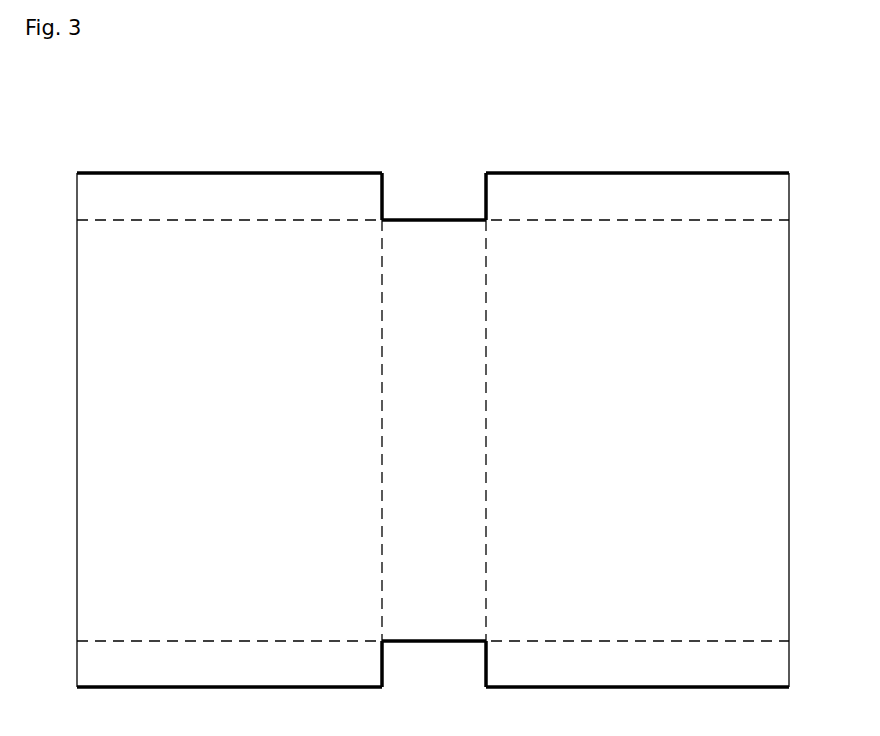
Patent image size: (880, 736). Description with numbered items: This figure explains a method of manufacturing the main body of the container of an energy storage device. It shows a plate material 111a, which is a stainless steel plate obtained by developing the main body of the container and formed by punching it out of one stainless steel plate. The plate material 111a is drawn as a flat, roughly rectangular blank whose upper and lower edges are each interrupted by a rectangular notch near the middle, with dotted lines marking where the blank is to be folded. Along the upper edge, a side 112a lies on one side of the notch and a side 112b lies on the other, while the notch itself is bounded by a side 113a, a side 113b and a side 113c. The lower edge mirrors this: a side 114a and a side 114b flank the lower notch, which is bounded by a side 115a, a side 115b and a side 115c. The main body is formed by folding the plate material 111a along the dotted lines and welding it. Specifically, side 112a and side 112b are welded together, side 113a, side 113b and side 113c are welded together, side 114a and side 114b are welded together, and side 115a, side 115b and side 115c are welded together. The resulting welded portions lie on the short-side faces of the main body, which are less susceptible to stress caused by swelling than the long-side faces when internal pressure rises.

The plate material 111a is at (813, 96).
The side 112a is at (203, 173).
The side 112b is at (622, 173).
The side 113a is at (392, 182).
The side 113b is at (476, 180).
The side 113c is at (415, 217).
The side 114a is at (213, 690).
The side 114b is at (642, 690).
The side 115a is at (382, 670).
The side 115b is at (483, 670).
The side 115c is at (415, 643).